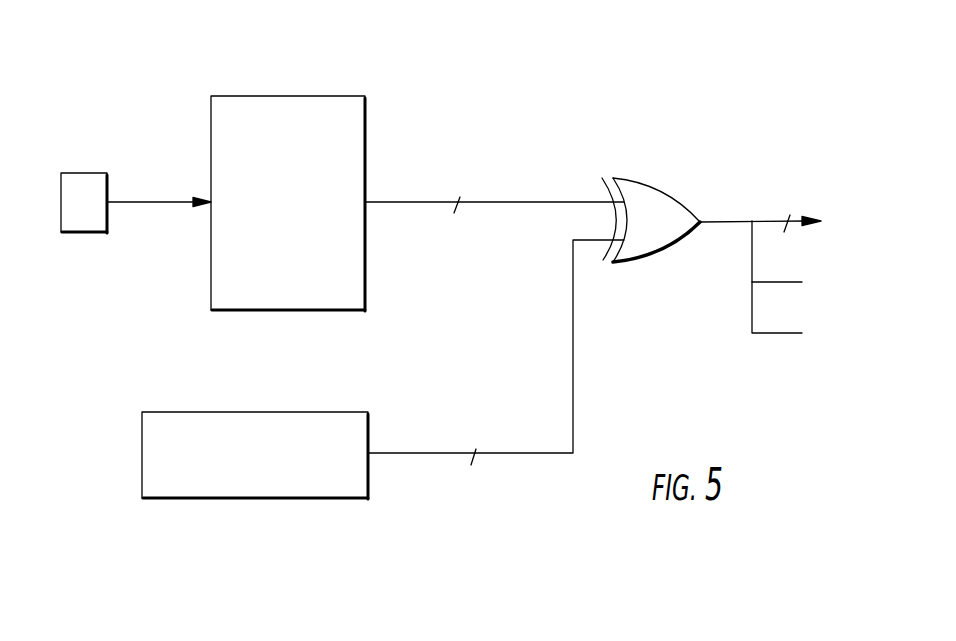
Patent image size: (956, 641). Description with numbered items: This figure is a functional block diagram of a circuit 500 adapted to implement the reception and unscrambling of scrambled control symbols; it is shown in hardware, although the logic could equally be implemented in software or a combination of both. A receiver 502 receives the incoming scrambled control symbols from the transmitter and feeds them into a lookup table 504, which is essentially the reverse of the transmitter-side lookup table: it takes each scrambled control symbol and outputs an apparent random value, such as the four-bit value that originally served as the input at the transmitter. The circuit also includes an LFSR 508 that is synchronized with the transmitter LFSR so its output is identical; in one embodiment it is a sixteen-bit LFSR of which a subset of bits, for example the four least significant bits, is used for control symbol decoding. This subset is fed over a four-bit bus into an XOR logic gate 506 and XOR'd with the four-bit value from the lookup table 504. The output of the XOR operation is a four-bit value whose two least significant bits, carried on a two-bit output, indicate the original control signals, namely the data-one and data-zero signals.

The circuit 500 is at (823, 50).
The receiver 502 is at (90, 233).
The lookup table 504 is at (366, 125).
The XOR logic gate 506 is at (680, 197).
The LFSR 508 is at (263, 499).